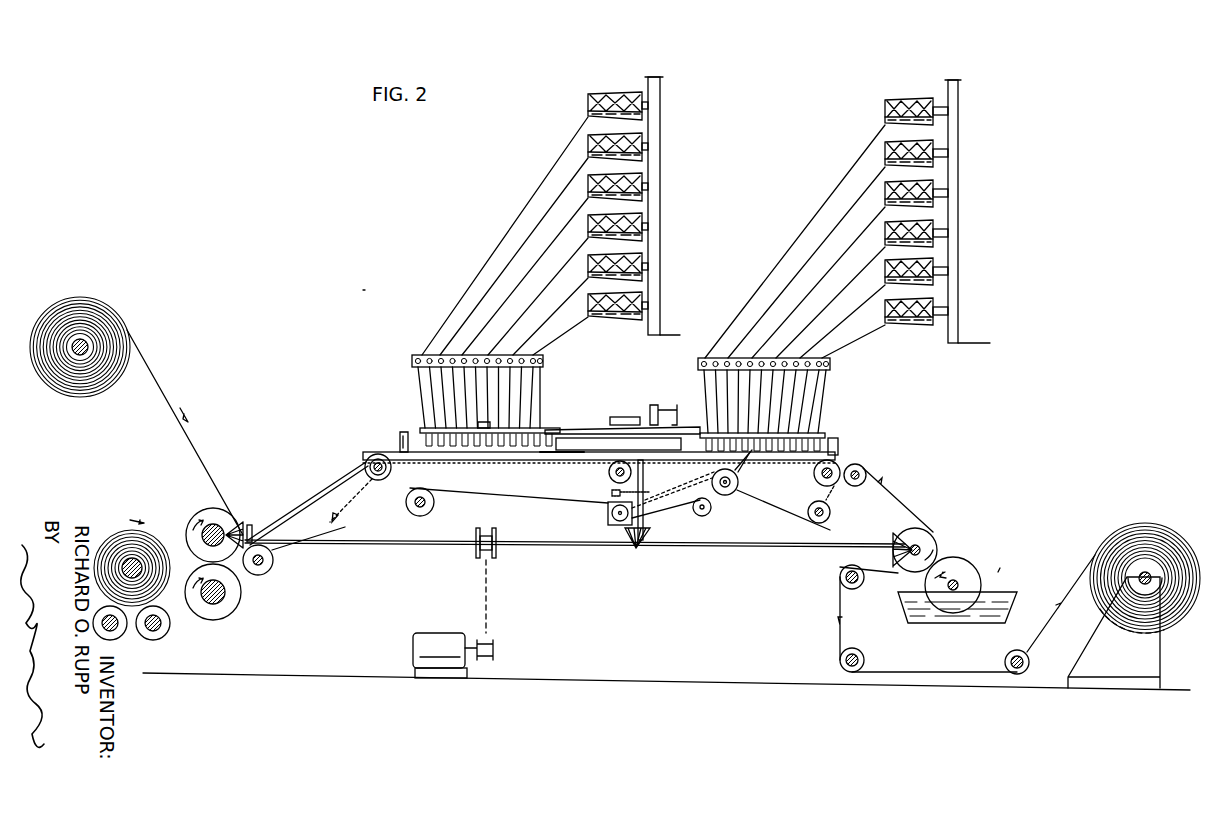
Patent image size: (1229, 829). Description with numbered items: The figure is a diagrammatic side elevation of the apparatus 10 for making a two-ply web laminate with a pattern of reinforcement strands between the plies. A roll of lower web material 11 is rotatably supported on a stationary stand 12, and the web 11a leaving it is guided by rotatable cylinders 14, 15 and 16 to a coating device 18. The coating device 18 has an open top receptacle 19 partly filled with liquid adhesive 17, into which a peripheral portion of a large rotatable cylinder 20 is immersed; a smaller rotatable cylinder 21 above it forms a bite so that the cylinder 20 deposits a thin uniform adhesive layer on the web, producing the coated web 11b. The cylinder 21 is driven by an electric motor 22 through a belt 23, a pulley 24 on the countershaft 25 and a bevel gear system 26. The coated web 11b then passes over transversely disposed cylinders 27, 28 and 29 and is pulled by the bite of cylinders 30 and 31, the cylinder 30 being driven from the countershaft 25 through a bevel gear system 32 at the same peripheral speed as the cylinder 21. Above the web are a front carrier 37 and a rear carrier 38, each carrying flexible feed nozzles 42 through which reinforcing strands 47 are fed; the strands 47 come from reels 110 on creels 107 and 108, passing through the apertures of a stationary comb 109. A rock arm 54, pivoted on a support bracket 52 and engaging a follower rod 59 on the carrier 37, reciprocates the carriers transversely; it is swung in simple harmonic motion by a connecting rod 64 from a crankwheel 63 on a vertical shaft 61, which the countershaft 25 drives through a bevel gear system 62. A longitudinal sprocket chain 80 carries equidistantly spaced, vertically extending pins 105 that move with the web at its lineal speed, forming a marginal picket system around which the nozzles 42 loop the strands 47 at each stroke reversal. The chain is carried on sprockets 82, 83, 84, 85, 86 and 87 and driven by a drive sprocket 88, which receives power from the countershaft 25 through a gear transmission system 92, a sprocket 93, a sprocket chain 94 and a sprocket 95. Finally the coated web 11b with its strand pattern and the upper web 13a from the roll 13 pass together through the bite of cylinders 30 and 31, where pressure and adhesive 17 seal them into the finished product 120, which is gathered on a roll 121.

The apparatus 10 is at (381, 324).
The roll of lower web material 11 is at (1146, 515).
The web 11a is at (840, 622).
The coated web 11b is at (560, 460).
The stationary stand 12 is at (1158, 648).
The roll of upper web 13 is at (95, 291).
The upper web 13a is at (171, 394).
The rotatable cylinder 14 is at (1016, 652).
The rotatable cylinder 15 is at (864, 660).
The rotatable cylinder 16 is at (852, 589).
The adhesive 17 is at (986, 623).
The coating device 18 is at (1005, 566).
The open top receptacle 19 is at (1017, 598).
The large rotatable cylinder 20 is at (961, 572).
The smaller rotatable cylinder 21 is at (927, 542).
The electric motor 22 is at (434, 636).
The belt 23 is at (486, 605).
The pulley 24 is at (476, 550).
The countershaft 25 is at (580, 547).
The bevel gear system 26 is at (888, 527).
The rotatable cylinder 27 is at (855, 486).
The rotatable cylinder 28 is at (614, 480).
The rotatable cylinder 29 is at (392, 470).
The cylinder 30 is at (211, 510).
The cylinder 31 is at (236, 603).
The bevel gear system 32 is at (249, 512).
The front carrier 37 is at (478, 455).
The rear carrier 38 is at (758, 466).
The flexible feed nozzle 42 is at (820, 438).
The reinforcing strand 47 is at (515, 274).
The support bracket 52 is at (572, 460).
The rock arm 54 is at (584, 422).
The follower rod 59 is at (475, 424).
The vertical shaft 61 is at (643, 470).
The bevel gear system 62 is at (641, 552).
The crankwheel 63 is at (628, 416).
The connecting rod 64 is at (664, 406).
The sprocket chain 80 is at (360, 470).
The sprocket 82 is at (828, 518).
The sprocket 83 is at (814, 473).
The sprocket 84 is at (378, 482).
The sprocket 85 is at (268, 568).
The sprocket 86 is at (431, 510).
The sprocket 87 is at (705, 516).
The drive sprocket 88 is at (736, 492).
The gear transmission system 92 is at (613, 528).
The sprocket 93 is at (608, 515).
The sprocket chain 94 is at (654, 517).
The sprocket 95 is at (727, 492).
The pin 105 is at (406, 448).
The creel 107 is at (660, 94).
The creel 108 is at (959, 87).
The comb 109 is at (417, 355).
The reel 110 is at (590, 135).
The finished product 120 is at (172, 588).
The roll 121 is at (121, 522).